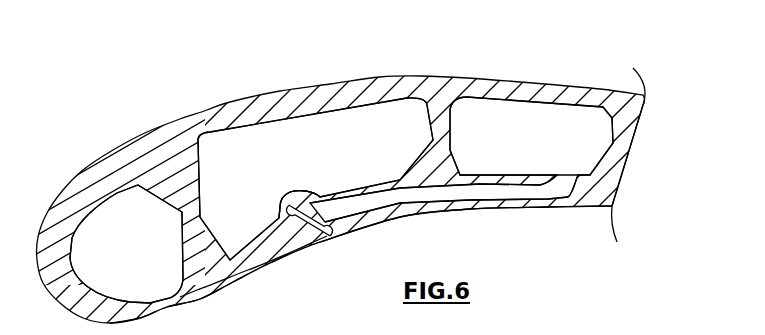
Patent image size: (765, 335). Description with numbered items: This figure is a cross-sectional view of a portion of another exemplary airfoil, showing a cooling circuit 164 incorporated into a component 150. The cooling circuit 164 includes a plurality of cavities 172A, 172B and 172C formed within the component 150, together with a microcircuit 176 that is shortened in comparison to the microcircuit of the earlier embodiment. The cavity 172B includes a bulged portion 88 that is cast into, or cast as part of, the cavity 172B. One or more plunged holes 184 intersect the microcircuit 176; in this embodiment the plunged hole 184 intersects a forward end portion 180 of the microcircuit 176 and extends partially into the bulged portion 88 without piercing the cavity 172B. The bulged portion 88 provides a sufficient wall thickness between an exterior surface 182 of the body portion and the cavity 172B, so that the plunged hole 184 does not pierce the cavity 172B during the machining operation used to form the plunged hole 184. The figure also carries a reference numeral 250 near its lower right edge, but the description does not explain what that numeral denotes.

The component 150 is at (382, 167).
The cooling circuit 164 is at (205, 139).
The cavity 172A is at (159, 254).
The cavity 172B is at (314, 158).
The cavity 172C is at (572, 146).
The bulged portion 88 is at (313, 191).
The microcircuit 176 is at (457, 191).
The forward end portion 180 is at (346, 224).
The exterior surface 182 is at (233, 282).
The plunged hole 184 is at (331, 236).
The cooling circuit 250 is at (606, 309).